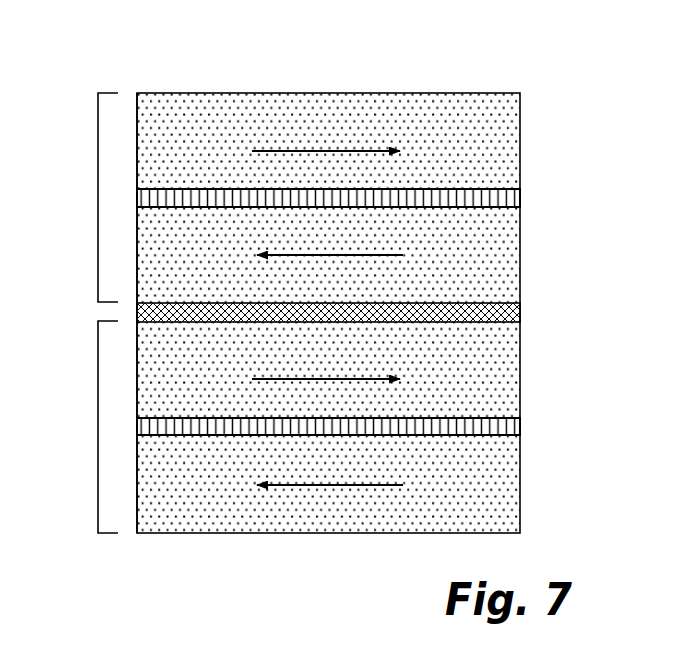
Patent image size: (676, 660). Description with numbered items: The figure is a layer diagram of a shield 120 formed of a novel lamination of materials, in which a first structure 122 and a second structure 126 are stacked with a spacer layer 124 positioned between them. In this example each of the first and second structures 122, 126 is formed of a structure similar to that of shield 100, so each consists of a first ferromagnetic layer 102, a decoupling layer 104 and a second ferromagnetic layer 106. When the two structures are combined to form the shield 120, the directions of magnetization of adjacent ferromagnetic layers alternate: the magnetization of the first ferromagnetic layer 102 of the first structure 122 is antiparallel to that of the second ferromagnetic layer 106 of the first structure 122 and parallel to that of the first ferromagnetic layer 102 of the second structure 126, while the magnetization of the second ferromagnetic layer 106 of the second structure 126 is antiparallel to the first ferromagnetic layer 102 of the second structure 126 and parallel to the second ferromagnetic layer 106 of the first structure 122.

The shield 120 is at (171, 71).
The first ferromagnetic layer 102 is at (500, 141).
The decoupling layer 104 is at (520, 197).
The second ferromagnetic layer 106 is at (500, 255).
The spacer layer 124 is at (520, 313).
The first structure 122 is at (98, 198).
The second structure 126 is at (98, 427).
The shield 100 is at (86, 313).